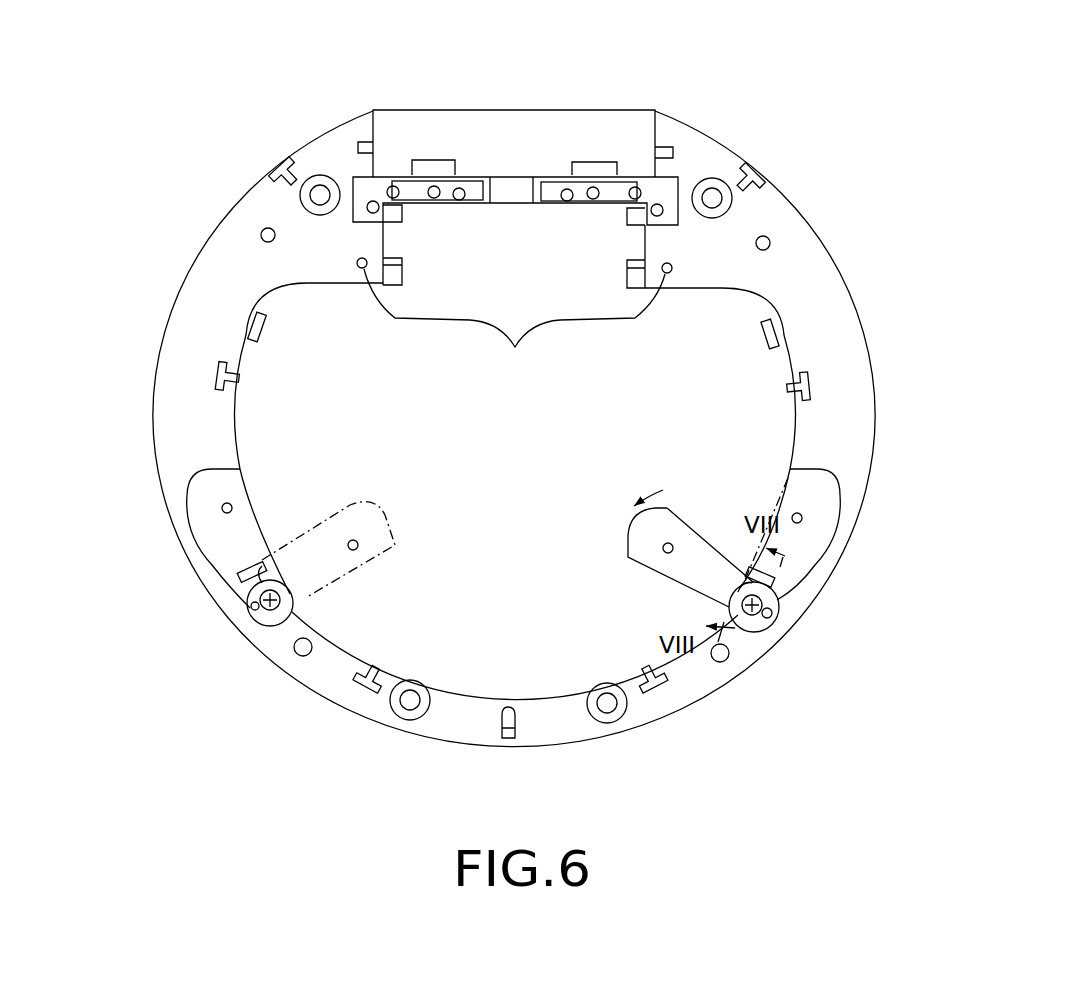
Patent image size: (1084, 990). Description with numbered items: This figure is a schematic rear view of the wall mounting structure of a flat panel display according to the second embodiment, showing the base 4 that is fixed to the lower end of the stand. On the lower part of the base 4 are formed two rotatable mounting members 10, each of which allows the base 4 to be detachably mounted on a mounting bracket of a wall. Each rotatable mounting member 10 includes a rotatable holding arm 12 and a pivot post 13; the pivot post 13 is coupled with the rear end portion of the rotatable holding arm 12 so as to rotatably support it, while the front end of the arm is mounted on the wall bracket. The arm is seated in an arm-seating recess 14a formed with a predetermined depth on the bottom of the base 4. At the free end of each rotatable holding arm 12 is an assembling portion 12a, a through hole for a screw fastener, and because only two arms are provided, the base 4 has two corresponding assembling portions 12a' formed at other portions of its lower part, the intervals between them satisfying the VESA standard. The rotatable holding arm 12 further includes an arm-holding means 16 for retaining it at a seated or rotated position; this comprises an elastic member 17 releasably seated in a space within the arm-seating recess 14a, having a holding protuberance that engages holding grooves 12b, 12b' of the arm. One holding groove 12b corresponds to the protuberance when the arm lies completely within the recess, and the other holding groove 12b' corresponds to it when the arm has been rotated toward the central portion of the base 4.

The base 4 is at (208, 231).
The rotatable mounting member 10 is at (252, 647).
The rotatable holding arm 12 is at (200, 518).
The assembling portion 12a is at (447, 516).
The corresponding assembling portion 12a' is at (514, 321).
The holding groove 12b is at (440, 593).
The holding groove 12b' is at (513, 632).
The pivot post 13 is at (267, 628).
The arm-seating recess 14a is at (822, 527).
The arm-holding means 16 is at (242, 563).
The elastic member 17 is at (247, 574).